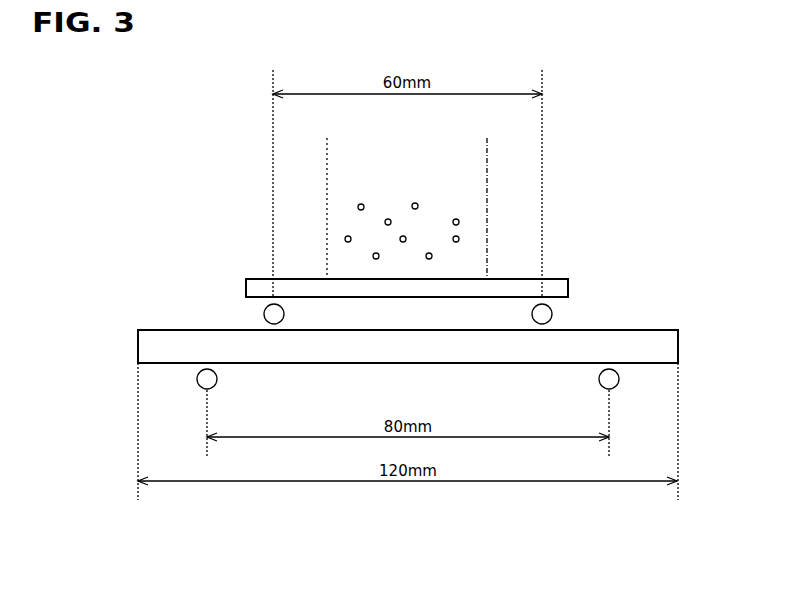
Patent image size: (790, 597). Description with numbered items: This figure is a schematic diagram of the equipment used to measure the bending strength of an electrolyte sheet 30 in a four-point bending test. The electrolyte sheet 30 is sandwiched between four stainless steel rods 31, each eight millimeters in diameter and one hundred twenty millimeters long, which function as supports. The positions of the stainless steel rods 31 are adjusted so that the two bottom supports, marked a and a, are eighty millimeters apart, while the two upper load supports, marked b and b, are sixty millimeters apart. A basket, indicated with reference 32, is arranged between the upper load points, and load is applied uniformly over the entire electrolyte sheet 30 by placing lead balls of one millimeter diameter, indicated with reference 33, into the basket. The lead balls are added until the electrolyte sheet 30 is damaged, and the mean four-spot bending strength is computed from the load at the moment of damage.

The electrolyte sheet 30 is at (632, 345).
The stainless steel rods 31 is at (264, 313).
The test sheet region 32 is at (489, 182).
The particles 33 is at (363, 203).